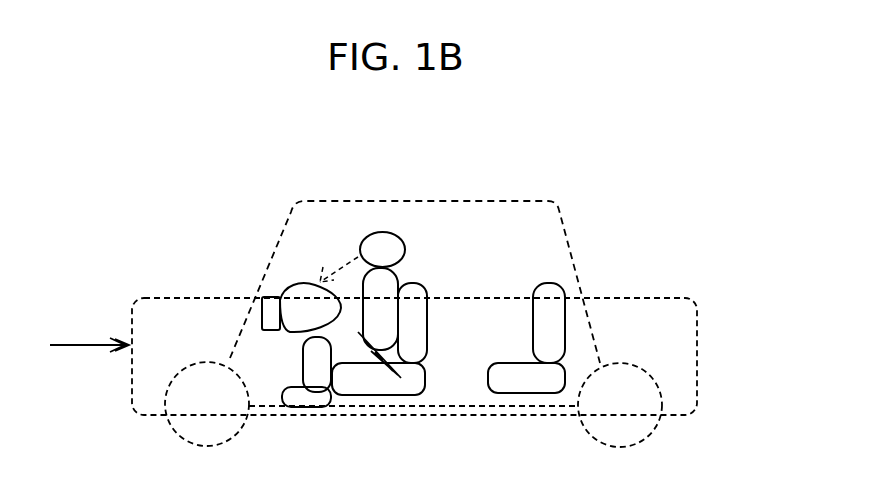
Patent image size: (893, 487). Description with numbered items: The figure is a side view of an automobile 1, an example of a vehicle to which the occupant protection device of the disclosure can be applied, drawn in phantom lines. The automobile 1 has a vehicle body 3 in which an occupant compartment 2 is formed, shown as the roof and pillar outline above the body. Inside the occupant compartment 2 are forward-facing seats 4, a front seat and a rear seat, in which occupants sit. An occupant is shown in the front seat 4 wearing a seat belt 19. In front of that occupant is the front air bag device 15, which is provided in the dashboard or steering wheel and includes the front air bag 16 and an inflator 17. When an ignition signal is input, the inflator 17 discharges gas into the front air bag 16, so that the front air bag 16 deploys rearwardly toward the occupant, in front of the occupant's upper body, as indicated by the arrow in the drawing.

The automobile 1 is at (677, 226).
The occupant compartment 2 is at (531, 227).
The vehicle body 3 is at (171, 327).
The seat 4 is at (417, 337).
The front air bag device 15 is at (203, 173).
The front air bag 16 is at (291, 290).
The inflator 17 is at (266, 296).
The seat belt 19 is at (417, 229).